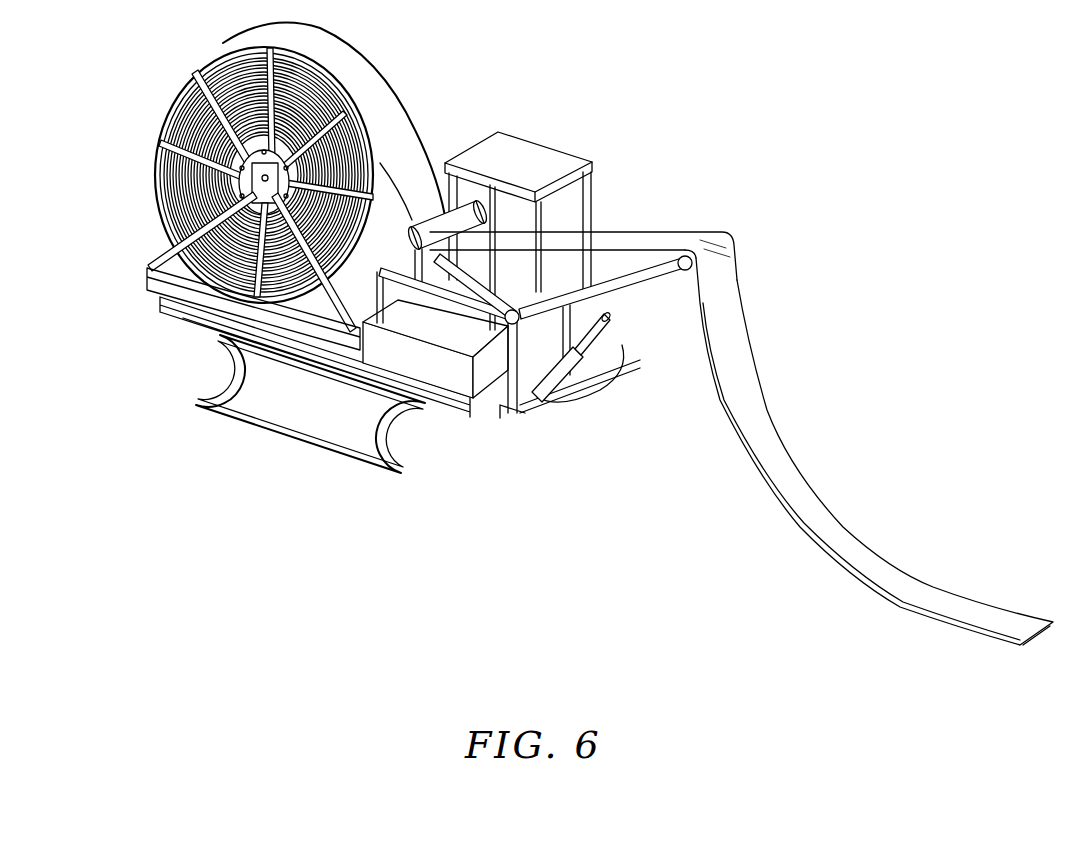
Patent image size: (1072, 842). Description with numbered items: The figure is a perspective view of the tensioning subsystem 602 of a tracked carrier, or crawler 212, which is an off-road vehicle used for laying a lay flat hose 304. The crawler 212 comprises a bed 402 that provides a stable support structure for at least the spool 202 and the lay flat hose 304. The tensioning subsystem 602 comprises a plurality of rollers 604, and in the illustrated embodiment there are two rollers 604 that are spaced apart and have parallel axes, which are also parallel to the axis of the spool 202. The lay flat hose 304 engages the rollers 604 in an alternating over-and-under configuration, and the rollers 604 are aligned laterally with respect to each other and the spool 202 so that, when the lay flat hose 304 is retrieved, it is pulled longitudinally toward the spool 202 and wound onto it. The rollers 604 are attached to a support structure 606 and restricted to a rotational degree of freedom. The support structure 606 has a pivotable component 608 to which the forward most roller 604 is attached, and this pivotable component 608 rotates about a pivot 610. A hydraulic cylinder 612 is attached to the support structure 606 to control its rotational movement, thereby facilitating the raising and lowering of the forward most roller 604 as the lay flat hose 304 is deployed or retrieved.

The spool 202 is at (172, 92).
The crawler 212 is at (178, 404).
The lay flat hose 304 is at (878, 598).
The bed 402 is at (150, 278).
The tensioning subsystem 602 is at (742, 218).
The roller 604 is at (455, 222).
The support structure 606 is at (512, 414).
The pivotable component 608 is at (650, 275).
The pivot 610 is at (460, 322).
The hydraulic cylinder 612 is at (583, 360).